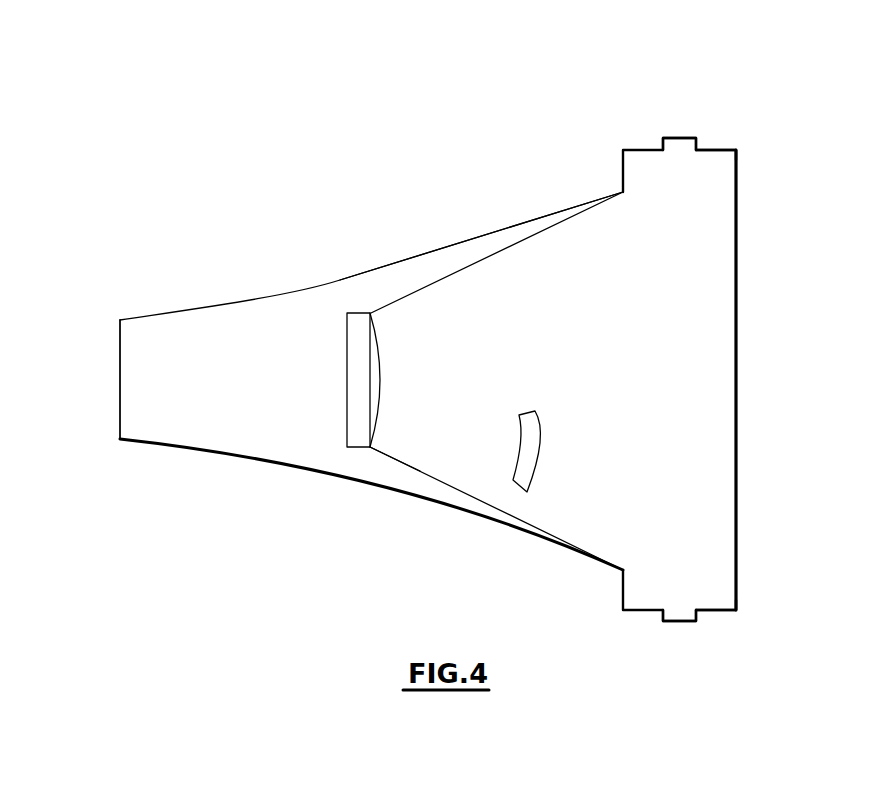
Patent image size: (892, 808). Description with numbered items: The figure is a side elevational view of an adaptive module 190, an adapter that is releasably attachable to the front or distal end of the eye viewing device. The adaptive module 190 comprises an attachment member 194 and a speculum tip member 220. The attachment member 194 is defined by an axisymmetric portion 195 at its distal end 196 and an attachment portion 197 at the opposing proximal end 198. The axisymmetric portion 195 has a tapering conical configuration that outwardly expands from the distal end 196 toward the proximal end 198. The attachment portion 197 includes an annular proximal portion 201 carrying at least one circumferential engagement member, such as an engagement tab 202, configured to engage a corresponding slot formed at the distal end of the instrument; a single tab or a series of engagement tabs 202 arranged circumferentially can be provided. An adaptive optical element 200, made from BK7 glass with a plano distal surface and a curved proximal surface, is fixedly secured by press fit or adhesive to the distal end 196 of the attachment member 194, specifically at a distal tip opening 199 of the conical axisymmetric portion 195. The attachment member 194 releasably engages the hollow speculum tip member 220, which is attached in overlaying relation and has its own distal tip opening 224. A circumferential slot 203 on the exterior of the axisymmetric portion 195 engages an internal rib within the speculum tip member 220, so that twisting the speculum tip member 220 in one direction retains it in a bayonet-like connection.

The adaptive module 190 is at (287, 63).
The attachment member 194 is at (463, 279).
The axisymmetric portion 195 is at (407, 313).
The distal end 196 is at (393, 447).
The attachment portion 197 is at (718, 381).
The proximal end 198 is at (720, 597).
The distal tip opening 199 is at (368, 450).
The adaptive optical element 200 is at (347, 430).
The annular proximal portion 201 is at (716, 150).
The engagement tab 202 is at (678, 137).
The circumferential slot 203 is at (520, 492).
The speculum tip member 220 is at (272, 293).
The distal tip opening 224 is at (118, 432).